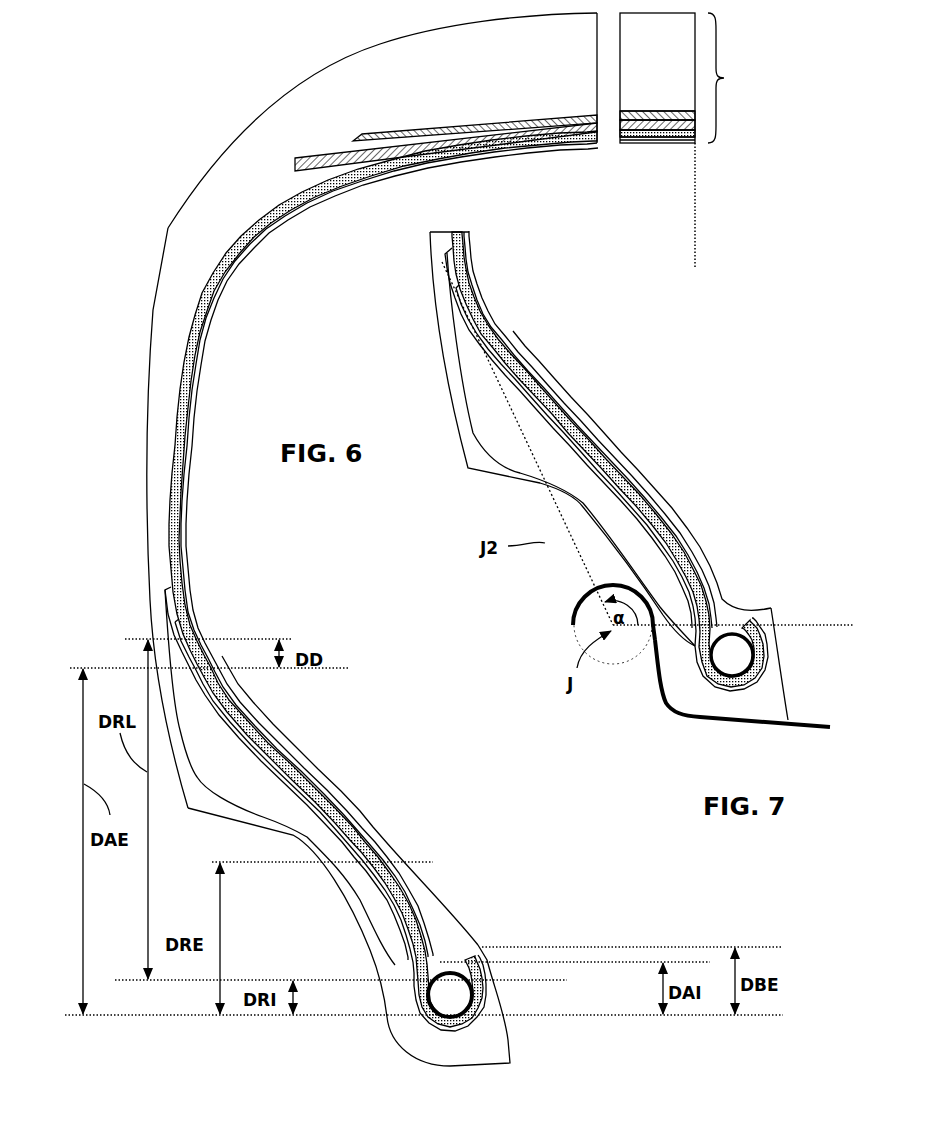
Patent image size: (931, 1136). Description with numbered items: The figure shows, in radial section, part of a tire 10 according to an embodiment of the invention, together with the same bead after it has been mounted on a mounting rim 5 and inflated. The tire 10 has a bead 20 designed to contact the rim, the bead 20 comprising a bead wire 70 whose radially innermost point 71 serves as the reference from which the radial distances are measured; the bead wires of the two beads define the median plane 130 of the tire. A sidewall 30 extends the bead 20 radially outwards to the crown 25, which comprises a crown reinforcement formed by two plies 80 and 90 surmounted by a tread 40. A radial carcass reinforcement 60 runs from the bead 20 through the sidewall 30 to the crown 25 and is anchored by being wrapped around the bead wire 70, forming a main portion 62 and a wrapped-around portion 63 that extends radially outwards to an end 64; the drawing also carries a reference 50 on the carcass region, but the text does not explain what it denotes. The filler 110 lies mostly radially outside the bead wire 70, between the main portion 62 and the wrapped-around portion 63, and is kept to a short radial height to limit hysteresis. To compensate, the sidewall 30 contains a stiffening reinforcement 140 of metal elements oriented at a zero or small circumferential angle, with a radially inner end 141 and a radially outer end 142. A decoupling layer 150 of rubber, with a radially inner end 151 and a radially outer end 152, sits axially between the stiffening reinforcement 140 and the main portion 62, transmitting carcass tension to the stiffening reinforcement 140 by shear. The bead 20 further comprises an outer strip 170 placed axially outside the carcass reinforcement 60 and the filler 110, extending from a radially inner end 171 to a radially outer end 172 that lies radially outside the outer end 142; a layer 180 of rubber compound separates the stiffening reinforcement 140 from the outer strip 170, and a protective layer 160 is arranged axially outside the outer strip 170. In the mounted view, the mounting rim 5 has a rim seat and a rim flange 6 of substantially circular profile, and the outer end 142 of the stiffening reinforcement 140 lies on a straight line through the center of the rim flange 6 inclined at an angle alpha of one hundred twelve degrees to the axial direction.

In FIG. 7, the mounting rim 5 is at (768, 713).
In FIG. 7, the rim flange 6 is at (572, 614).
In FIG. 6, the tire 10 is at (193, 92).
In FIG. 6, the bead 20 is at (328, 952).
In FIG. 6, the crown 25 is at (694, 78).
In FIG. 6, the sidewall 30 is at (156, 392).
In FIG. 6, the tread 40 is at (572, 78).
In FIG. 6, the carcass ply 50 is at (208, 296).
In FIG. 7, the carcass ply 50 is at (608, 459).
In FIG. 6, the carcass reinforcement 60 is at (184, 347).
In FIG. 7, the carcass reinforcement 60 is at (588, 430).
In FIG. 6, the main portion 62 is at (410, 890).
In FIG. 7, the main portion 62 is at (700, 548).
In FIG. 6, the wrapped-around portion 63 is at (380, 907).
In FIG. 7, the wrapped-around portion 63 is at (663, 563).
In FIG. 6, the end of the wrapped-around portion 64 is at (346, 871).
In FIG. 6, the bead wire 70 is at (452, 993).
In FIG. 7, the bead wire 70 is at (733, 655).
In FIG. 6, the radially innermost point of the bead wire 71 is at (447, 1037).
In FIG. 7, the radially innermost point of the bead wire 71 is at (729, 683).
In FIG. 6, the crown reinforcement ply 80 is at (340, 150).
In FIG. 6, the crown reinforcement ply 90 is at (380, 136).
In FIG. 6, the filler 110 is at (423, 972).
In FIG. 7, the filler 110 is at (722, 623).
In FIG. 6, the median plane 130 is at (697, 232).
In FIG. 6, the stiffening reinforcement 140 is at (326, 792).
In FIG. 7, the stiffening reinforcement 140 is at (600, 442).
In FIG. 6, the radially inner end of the stiffening reinforcement 141 is at (461, 956).
In FIG. 7, the radially inner end of the stiffening reinforcement 141 is at (740, 620).
In FIG. 6, the radially outer end of the stiffening reinforcement 142 is at (196, 674).
In FIG. 7, the radially outer end of the stiffening reinforcement 142 is at (476, 332).
In FIG. 6, the decoupling layer 150 is at (175, 611).
In FIG. 7, the decoupling layer 150 is at (568, 438).
In FIG. 6, the radially inner end of the decoupling layer 151 is at (473, 957).
In FIG. 7, the radially inner end of the decoupling layer 151 is at (757, 622).
In FIG. 6, the radially outer end of the decoupling layer 152 is at (178, 576).
In FIG. 6, the protective layer 160 is at (300, 845).
In FIG. 7, the protective layer 160 is at (580, 506).
In FIG. 6, the outer strip 170 is at (280, 777).
In FIG. 7, the outer strip 170 is at (571, 449).
In FIG. 6, the radially inner end of the outer strip 171 is at (411, 984).
In FIG. 6, the radially outer end of the outer strip 172 is at (185, 636).
In FIG. 6, the layer of rubber compound 180 is at (250, 748).
In FIG. 7, the layer of rubber compound 180 is at (555, 397).